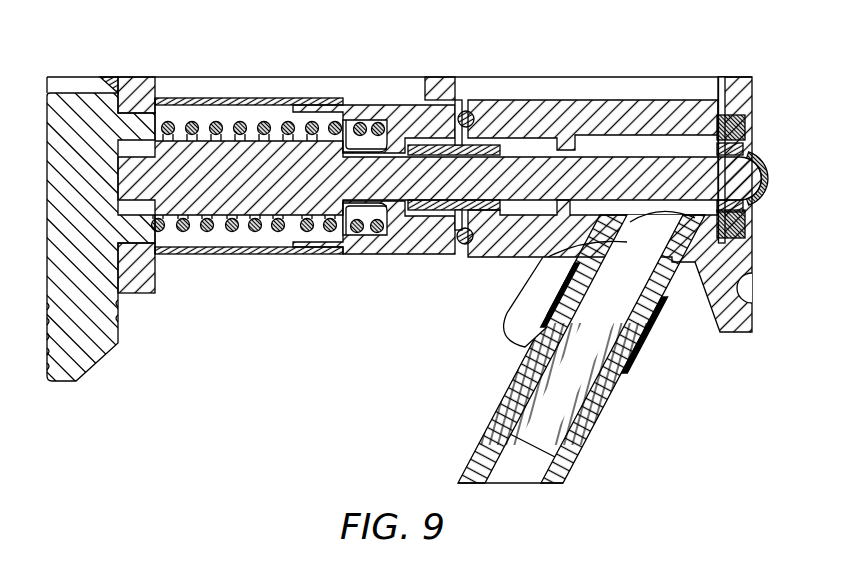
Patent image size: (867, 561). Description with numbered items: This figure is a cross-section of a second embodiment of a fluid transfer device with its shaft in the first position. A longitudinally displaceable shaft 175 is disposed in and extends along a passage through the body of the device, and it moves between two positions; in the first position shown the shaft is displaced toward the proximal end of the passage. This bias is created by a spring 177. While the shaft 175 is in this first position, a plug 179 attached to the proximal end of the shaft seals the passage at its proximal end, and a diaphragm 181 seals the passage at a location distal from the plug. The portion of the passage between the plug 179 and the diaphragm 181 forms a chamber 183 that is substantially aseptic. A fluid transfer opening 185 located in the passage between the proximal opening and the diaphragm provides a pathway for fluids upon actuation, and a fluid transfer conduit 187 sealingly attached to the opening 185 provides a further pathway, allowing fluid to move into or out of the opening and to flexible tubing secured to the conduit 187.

The shaft 175 is at (515, 160).
The spring 177 is at (287, 77).
The plug 179 is at (760, 168).
The diaphragm 181 is at (423, 205).
The chamber 183 is at (642, 145).
The fluid transfer opening 185 is at (590, 362).
The fluid transfer conduit 187 is at (542, 383).